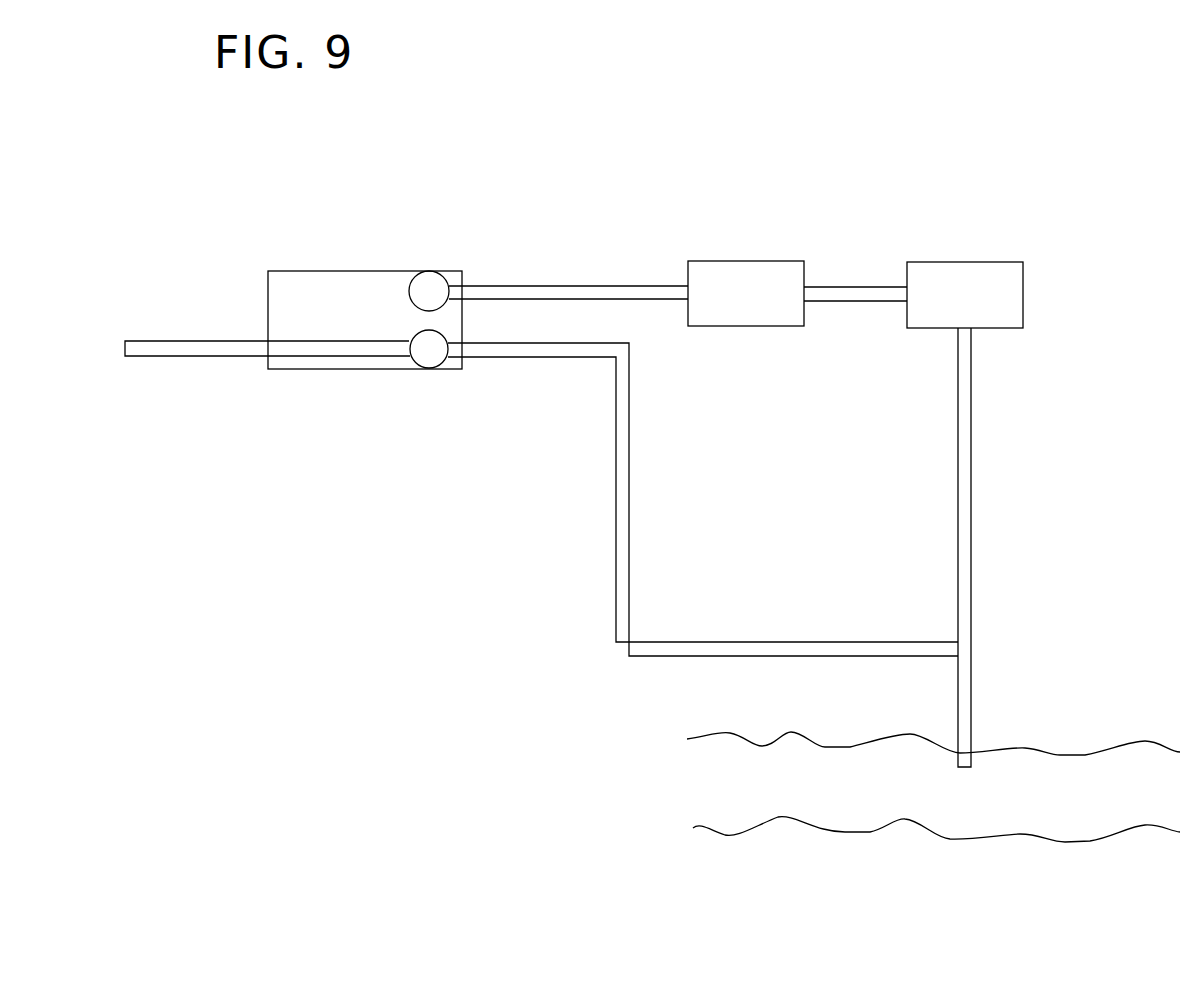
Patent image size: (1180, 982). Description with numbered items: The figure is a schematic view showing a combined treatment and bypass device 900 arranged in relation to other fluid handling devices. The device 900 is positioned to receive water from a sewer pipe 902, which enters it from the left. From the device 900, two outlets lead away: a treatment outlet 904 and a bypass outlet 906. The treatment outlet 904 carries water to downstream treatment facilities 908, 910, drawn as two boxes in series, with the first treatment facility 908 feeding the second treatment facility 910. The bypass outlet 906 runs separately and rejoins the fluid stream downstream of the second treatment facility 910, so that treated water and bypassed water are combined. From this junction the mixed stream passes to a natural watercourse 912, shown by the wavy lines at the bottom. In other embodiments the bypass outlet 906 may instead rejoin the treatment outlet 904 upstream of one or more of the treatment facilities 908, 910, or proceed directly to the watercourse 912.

The combined treatment and bypass device 900 is at (349, 278).
The sewer pipe 902 is at (202, 348).
The treatment outlet 904 is at (502, 285).
The bypass outlet 906 is at (522, 350).
The treatment facility 908 is at (737, 268).
The second treatment facility 910 is at (939, 270).
The natural watercourse 912 is at (825, 808).